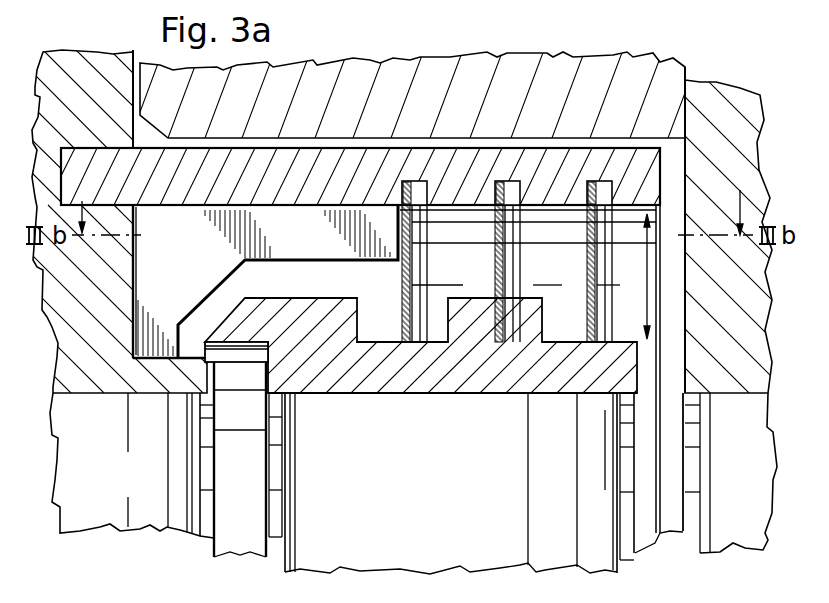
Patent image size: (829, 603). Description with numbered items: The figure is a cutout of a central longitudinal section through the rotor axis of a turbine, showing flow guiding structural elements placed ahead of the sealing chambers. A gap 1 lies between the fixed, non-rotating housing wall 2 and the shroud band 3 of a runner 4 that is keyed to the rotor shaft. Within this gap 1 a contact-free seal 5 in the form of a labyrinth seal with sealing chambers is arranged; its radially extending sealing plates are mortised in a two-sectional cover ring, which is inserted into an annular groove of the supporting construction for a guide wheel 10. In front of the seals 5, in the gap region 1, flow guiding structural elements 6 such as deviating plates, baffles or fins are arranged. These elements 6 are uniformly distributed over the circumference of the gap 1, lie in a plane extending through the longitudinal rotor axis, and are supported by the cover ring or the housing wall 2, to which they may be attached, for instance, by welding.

The gap 1 is at (647, 281).
The housing wall 2 is at (159, 209).
The shroud band 3 is at (487, 345).
The runner 4 is at (485, 485).
The contact-free seal 5 is at (402, 288).
The flow guiding structural element 6 is at (333, 253).
The guide wheel 10 is at (126, 486).